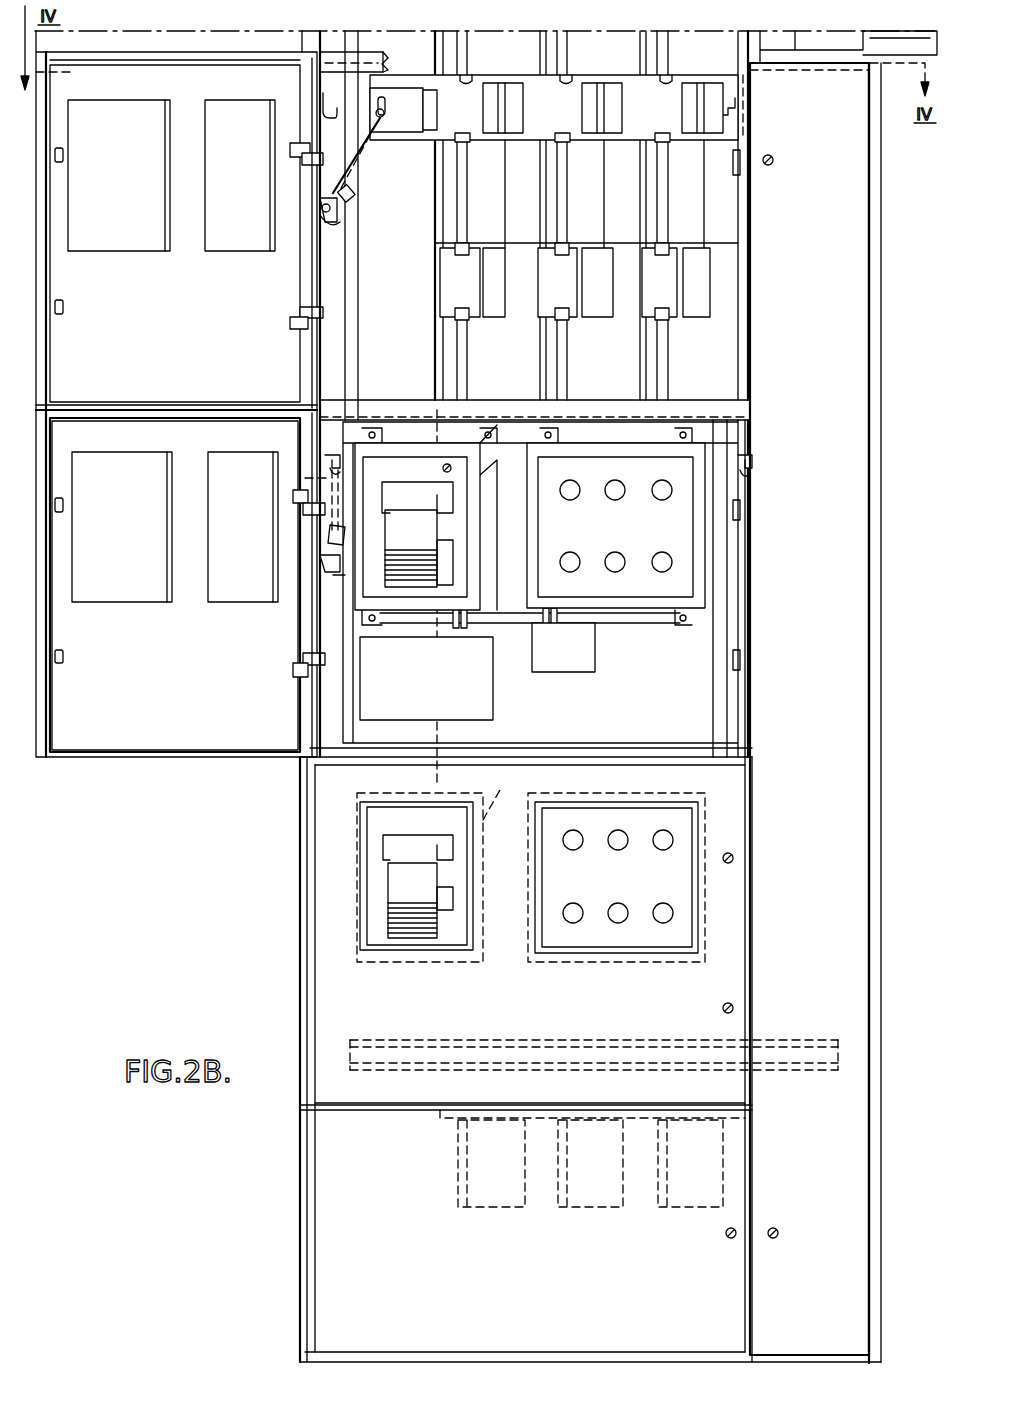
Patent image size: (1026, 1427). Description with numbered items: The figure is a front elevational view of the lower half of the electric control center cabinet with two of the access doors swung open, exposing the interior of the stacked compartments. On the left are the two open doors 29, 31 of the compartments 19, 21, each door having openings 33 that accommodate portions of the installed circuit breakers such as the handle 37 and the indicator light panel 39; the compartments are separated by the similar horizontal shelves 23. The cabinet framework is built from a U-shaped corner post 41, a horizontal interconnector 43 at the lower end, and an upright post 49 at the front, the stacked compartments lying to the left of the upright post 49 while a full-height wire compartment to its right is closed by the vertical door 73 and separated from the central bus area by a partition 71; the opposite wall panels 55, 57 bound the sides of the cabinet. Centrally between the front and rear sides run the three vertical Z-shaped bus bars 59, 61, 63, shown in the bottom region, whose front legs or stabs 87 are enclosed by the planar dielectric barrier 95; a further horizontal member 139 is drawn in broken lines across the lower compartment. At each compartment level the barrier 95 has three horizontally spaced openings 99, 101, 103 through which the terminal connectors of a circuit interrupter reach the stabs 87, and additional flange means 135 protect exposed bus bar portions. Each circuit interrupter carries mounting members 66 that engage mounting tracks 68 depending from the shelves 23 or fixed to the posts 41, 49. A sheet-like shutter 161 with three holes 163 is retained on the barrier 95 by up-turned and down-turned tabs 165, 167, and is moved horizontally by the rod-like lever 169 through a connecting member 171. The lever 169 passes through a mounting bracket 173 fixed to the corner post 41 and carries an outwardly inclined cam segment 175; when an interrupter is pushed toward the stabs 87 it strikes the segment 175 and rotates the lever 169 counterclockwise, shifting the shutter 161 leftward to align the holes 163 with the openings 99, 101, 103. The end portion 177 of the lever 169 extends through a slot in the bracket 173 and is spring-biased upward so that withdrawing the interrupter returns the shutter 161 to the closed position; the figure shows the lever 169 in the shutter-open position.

The compartment 19 is at (325, 262).
The compartment 21 is at (325, 632).
The horizontal shelf 23 is at (322, 70).
The access door 29 is at (197, 352).
The access door 31 is at (197, 707).
The opening 33 is at (145, 251).
The handle 37 is at (420, 537).
The indicator light panel 39 is at (600, 535).
The corner post 41 is at (875, 240).
The horizontal interconnector 43 is at (556, 1362).
The upright post 49 is at (748, 693).
The wall panel 55 is at (300, 934).
The wall panel 57 is at (882, 935).
The bus bar 59 is at (498, 1200).
The bus bar 61 is at (594, 1200).
The bus bar 63 is at (690, 1200).
The mounting member 66 is at (330, 455).
The mounting track 68 is at (328, 470).
The partition 71 is at (805, 45).
The vertical door 73 is at (787, 539).
The stab 87 is at (452, 268).
The barrier 95 is at (517, 389).
The opening 99 is at (445, 293).
The opening 101 is at (548, 295).
The opening 103 is at (650, 295).
The flange 135 is at (508, 134).
The cable channel 139 is at (425, 1055).
The shutter 161 is at (430, 142).
The hole 163 is at (524, 100).
The up-turned tab 165 is at (462, 134).
The down-turned tab 167 is at (470, 78).
The lever 169 is at (363, 142).
The connecting member 171 is at (402, 88).
The mounting bracket 173 is at (340, 226).
The cam segment 175 is at (354, 196).
The end portion 177 is at (320, 210).